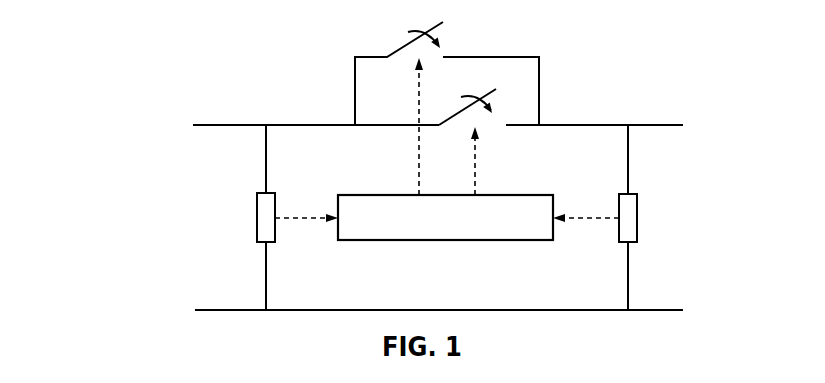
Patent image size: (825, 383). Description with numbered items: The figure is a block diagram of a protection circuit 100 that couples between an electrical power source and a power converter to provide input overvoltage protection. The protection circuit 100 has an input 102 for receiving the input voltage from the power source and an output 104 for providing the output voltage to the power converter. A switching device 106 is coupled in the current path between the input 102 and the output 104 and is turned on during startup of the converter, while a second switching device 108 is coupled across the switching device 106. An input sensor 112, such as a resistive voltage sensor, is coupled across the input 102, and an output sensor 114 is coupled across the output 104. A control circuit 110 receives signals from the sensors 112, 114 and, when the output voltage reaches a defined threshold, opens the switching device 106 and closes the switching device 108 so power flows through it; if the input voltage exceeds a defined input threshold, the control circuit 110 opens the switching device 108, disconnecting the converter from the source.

The protection circuit 100 is at (205, 38).
The input 102 is at (218, 163).
The output 104 is at (683, 166).
The switching device 106 is at (507, 103).
The switching device 108 is at (452, 38).
The control circuit 110 is at (402, 195).
The input sensor 112 is at (256, 233).
The output sensor 114 is at (637, 232).